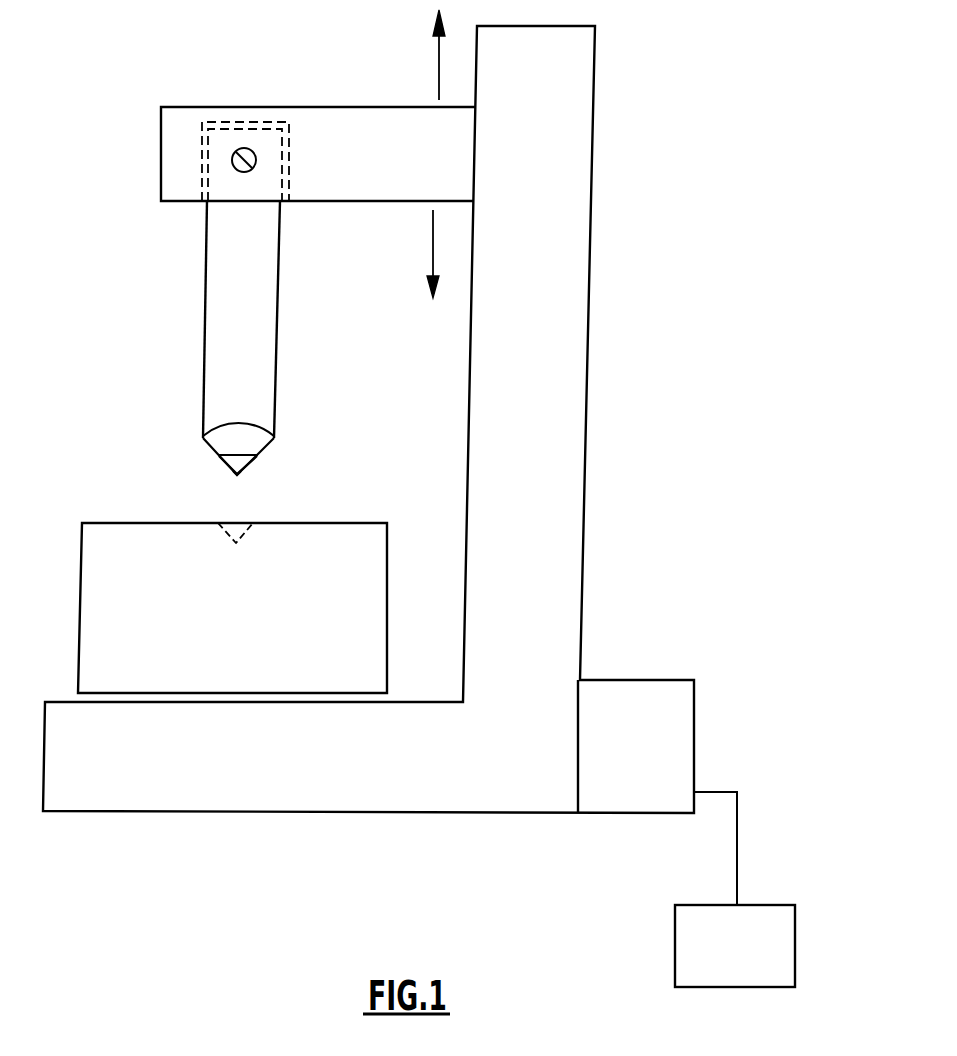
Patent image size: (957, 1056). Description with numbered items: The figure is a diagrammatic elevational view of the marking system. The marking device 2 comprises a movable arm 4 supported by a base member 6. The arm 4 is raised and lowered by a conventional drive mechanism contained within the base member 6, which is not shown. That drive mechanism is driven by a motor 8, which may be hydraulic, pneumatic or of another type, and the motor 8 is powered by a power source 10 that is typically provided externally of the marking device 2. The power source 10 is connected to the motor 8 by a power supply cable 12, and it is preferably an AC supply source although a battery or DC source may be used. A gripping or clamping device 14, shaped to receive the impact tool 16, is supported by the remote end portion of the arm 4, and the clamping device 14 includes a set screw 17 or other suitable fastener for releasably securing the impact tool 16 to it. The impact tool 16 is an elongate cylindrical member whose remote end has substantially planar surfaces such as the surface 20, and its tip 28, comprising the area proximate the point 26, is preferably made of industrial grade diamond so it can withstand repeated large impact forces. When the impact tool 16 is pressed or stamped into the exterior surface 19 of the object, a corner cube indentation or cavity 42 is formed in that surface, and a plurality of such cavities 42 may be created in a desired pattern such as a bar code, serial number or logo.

The marking device 2 is at (704, 339).
The movable arm 4 is at (330, 118).
The base member 6 is at (569, 517).
The motor 8 is at (695, 708).
The power source 10 is at (799, 935).
The power supply cable 12 is at (737, 820).
The clamping device 14 is at (202, 152).
The impact tool 16 is at (278, 315).
The set screw 17 is at (252, 148).
The exterior surface 19 is at (358, 523).
The planar surface 20 is at (258, 443).
The point 26 is at (237, 477).
The tip 28 is at (226, 466).
The corner cube cavity 42 is at (233, 530).